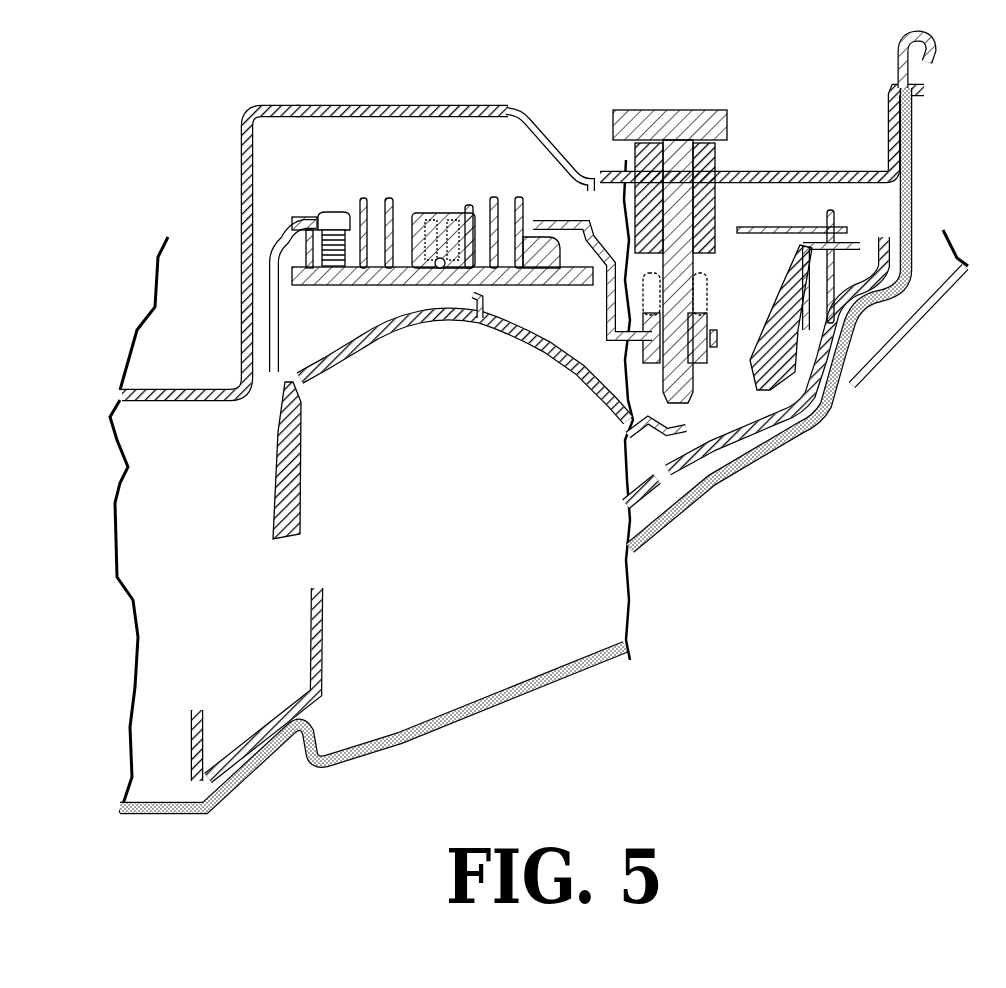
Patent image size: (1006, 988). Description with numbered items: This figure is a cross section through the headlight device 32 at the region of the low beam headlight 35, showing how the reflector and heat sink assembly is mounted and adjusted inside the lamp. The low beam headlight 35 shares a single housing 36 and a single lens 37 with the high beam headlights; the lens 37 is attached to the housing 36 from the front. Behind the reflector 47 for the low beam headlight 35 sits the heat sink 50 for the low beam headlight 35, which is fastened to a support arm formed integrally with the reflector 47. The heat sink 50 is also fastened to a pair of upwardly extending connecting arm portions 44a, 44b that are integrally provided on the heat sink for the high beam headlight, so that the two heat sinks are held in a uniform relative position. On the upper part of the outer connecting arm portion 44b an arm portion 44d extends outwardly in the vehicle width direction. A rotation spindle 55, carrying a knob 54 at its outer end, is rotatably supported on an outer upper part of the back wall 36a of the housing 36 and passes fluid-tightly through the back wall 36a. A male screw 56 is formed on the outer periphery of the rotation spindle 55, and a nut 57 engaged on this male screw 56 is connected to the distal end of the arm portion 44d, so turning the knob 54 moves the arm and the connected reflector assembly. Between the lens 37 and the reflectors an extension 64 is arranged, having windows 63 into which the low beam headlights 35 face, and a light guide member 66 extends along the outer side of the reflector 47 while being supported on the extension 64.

The headlight device 32 is at (519, 704).
The low beam headlight 35 is at (280, 552).
The housing 36 is at (170, 384).
The back wall 36a is at (458, 107).
The lens 37 is at (578, 670).
The connecting arm portion 44a is at (268, 293).
The connecting arm portion 44b is at (552, 220).
The arm portion 44d is at (622, 430).
The reflector for the low beam headlight 47 is at (420, 333).
The heat sink for the low beam headlight 50 is at (360, 282).
The knob 54 is at (688, 110).
The rotation spindle 55 is at (693, 263).
The male screw 56 is at (693, 367).
The nut 57 is at (710, 337).
The window for the low beam headlight 63 is at (322, 637).
The extension 64 is at (187, 733).
The light guide member 66 is at (830, 412).